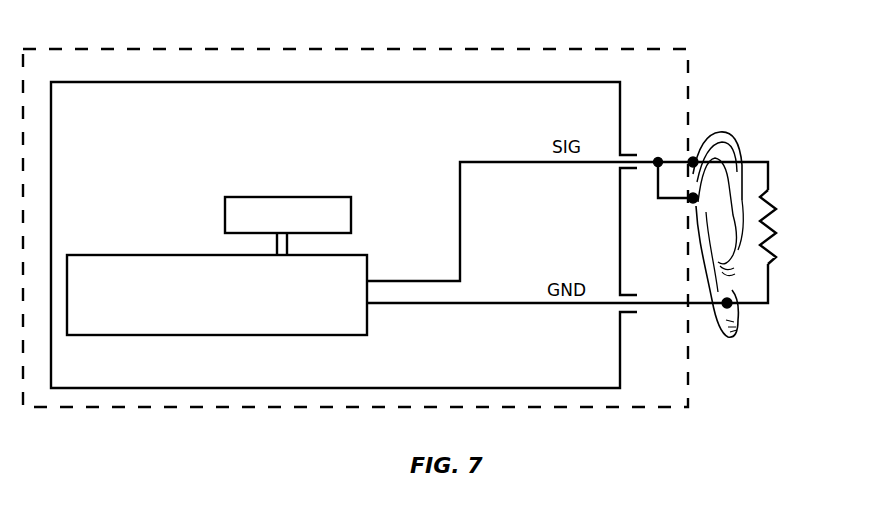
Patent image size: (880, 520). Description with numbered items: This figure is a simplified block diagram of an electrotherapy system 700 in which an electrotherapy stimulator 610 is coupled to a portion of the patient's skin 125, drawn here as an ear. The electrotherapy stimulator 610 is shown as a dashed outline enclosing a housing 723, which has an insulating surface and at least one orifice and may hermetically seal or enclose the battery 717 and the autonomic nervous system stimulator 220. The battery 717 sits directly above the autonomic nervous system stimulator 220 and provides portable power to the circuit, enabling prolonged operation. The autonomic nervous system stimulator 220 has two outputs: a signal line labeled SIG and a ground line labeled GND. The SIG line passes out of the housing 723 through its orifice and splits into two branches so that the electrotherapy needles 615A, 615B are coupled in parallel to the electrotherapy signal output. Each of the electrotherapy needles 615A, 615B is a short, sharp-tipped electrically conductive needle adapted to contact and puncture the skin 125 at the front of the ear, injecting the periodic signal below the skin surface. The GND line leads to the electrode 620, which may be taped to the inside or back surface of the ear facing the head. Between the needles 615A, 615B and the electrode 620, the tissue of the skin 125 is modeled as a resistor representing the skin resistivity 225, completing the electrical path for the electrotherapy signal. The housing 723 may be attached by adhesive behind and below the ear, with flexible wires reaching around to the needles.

The autonomic nervous system stimulation system 700 is at (782, 66).
The electrotherapy stimulator 610 is at (326, 47).
The housing 723 is at (606, 387).
The autonomic nervous system stimulator 220 is at (155, 255).
The battery 717 is at (224, 205).
The electrotherapy needle 615A is at (690, 159).
The electrotherapy needle 615B is at (690, 201).
The skin resistivity 225 is at (776, 222).
The patient's skin 125 is at (737, 149).
The electrode 620 is at (731, 307).